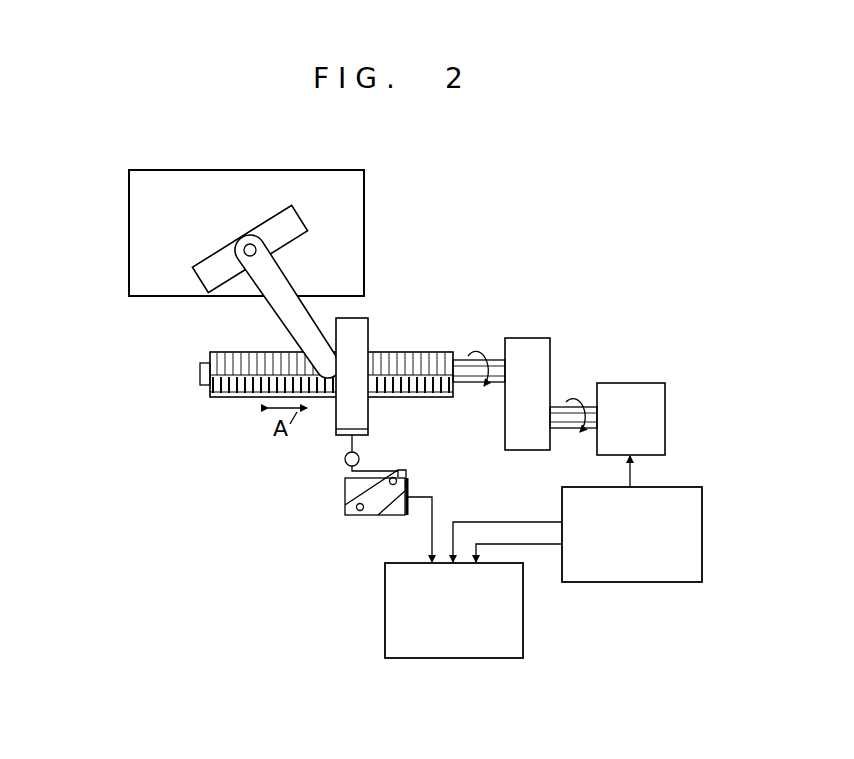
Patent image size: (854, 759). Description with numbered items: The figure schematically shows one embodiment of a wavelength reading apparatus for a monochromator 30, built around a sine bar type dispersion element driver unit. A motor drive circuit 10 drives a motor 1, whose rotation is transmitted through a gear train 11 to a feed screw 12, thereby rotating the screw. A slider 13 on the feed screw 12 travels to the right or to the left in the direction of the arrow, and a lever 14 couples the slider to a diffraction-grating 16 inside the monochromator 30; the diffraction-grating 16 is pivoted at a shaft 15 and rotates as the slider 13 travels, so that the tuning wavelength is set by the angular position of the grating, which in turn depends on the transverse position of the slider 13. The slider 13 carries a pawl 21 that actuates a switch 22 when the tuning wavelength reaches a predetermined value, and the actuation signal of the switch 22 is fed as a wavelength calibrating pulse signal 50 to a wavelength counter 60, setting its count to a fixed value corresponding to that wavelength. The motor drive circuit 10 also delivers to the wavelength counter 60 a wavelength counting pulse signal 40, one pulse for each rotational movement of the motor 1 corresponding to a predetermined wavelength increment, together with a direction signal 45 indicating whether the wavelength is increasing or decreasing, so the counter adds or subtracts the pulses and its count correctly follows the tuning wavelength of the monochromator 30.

The motor 1 is at (628, 383).
The motor drive circuit 10 is at (702, 535).
The gear train 11 is at (533, 338).
The feed screw 12 is at (427, 352).
The slider 13 is at (370, 320).
The lever 14 is at (276, 318).
The shaft 15 is at (258, 252).
The diffraction-grating 16 is at (295, 206).
The pawl 21 is at (362, 442).
The switch 22 is at (345, 496).
The monochromator 30 is at (220, 168).
The wavelength counting pulse signal 40 is at (490, 522).
The direction signal 45 is at (535, 544).
The wavelength calibrating pulse signal 50 is at (452, 495).
The wavelength counter 60 is at (385, 604).